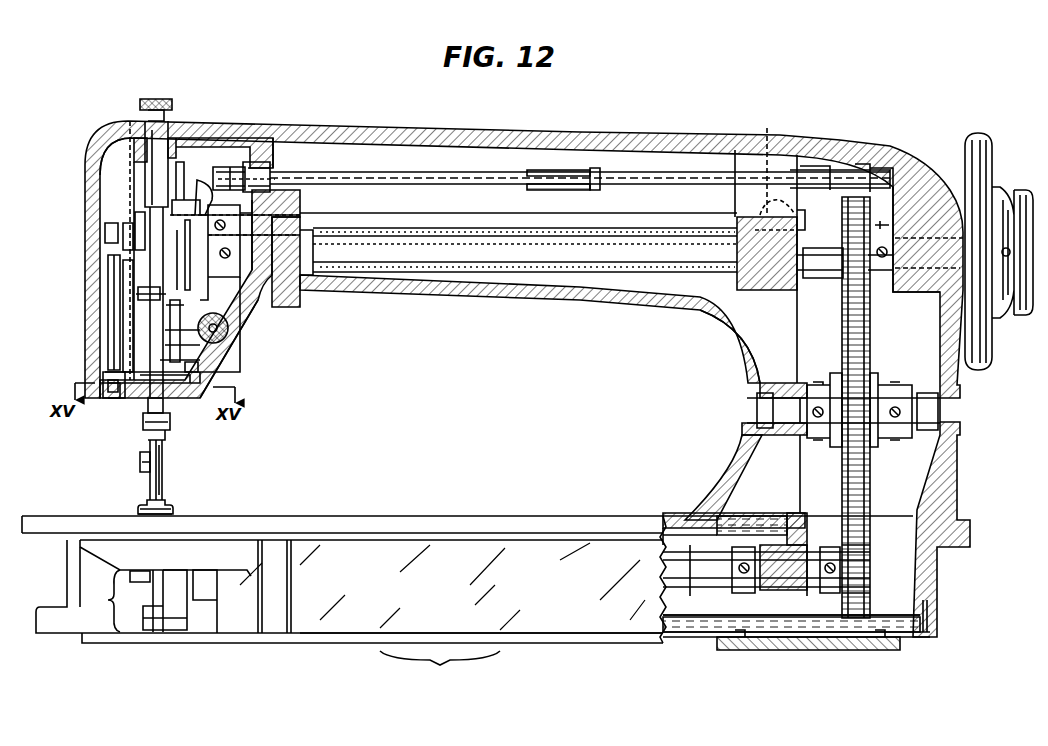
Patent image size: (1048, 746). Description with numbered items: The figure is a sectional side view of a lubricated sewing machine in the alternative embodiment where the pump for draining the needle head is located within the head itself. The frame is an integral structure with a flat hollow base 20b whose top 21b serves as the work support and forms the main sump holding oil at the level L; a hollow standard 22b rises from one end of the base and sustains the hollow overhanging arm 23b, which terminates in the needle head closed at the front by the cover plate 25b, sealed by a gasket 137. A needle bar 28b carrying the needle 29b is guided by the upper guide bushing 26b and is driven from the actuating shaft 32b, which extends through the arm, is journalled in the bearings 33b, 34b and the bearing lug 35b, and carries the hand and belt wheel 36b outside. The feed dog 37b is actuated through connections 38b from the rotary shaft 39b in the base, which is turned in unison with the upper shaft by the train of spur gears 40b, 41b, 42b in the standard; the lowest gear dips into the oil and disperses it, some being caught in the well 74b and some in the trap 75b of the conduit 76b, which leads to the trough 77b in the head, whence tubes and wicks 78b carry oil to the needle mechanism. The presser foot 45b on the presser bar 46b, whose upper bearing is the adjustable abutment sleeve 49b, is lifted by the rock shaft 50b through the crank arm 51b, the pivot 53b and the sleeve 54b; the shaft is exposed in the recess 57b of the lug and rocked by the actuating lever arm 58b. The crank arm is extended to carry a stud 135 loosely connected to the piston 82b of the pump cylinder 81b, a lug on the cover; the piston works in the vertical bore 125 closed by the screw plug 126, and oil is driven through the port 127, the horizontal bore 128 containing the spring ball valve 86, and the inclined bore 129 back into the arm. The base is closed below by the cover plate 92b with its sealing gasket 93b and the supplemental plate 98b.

The base 20b is at (440, 669).
The top 21b is at (478, 515).
The standard 22b is at (748, 375).
The overhanging arm 23b is at (486, 299).
The cover plate 25b is at (100, 162).
The upper guide bushing 26b is at (152, 136).
The needle bar 28b is at (150, 262).
The needle 29b is at (163, 468).
The actuating shaft 32b is at (642, 256).
The bearing 33b is at (302, 226).
The bearing 34b is at (913, 294).
The bearing lug 35b is at (765, 290).
The hand and belt wheel 36b is at (978, 160).
The feed dog 37b is at (140, 516).
The connections 38b is at (148, 601).
The rotary shaft 39b is at (702, 568).
The spur gear 40b is at (848, 282).
The spur gear 41b is at (870, 362).
The spur gear 42b is at (860, 580).
The presser foot 45b is at (172, 511).
The presser bar 46b is at (148, 455).
The abutment sleeve 49b is at (153, 98).
The rock shaft 50b is at (502, 226).
The crank arm 51b is at (118, 225).
The pivot 53b is at (128, 337).
The sleeve 54b is at (148, 355).
The recess 57b is at (773, 167).
The actuating lever arm 58b is at (790, 214).
The well 74b is at (760, 516).
The trap 75b is at (830, 172).
The conduit 76b is at (445, 178).
The trough 77b is at (232, 178).
The tubes and wicks 78b is at (200, 195).
The pump cylinder 81b is at (138, 296).
The piston 82b is at (110, 322).
The spring ball valve 86 is at (185, 362).
The cover plate 92b is at (625, 640).
The sealing gasket 93b is at (549, 630).
The supplemental plate 98b is at (825, 650).
The vertical bore 125 is at (103, 385).
The screw plug 126 is at (110, 399).
The port 127 is at (123, 399).
The horizontal bore 128 is at (170, 400).
The inclined bore 129 is at (256, 300).
The stud 135 is at (135, 240).
The gasket 137 is at (108, 134).
The oil level L is at (925, 610).